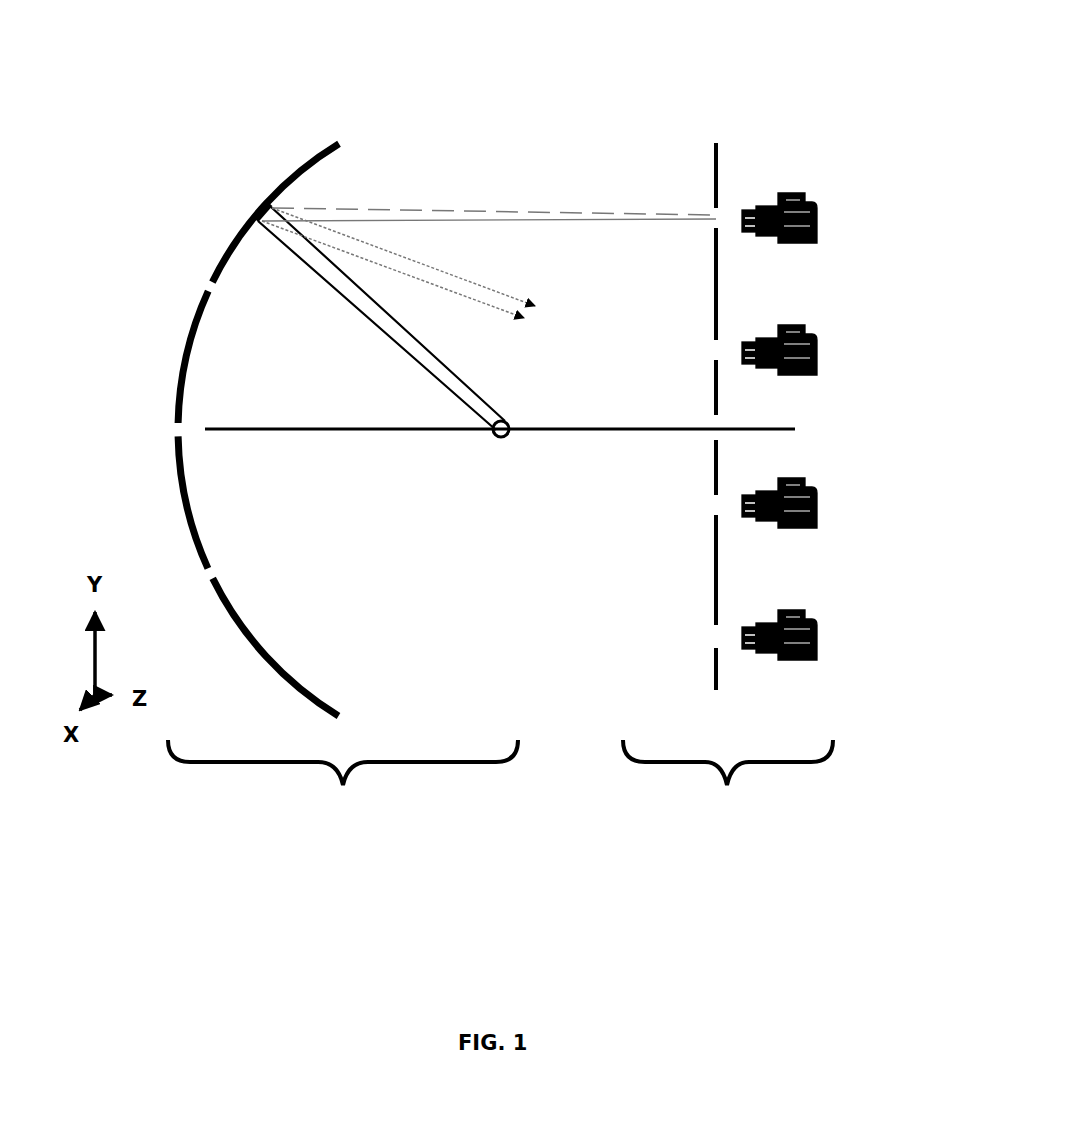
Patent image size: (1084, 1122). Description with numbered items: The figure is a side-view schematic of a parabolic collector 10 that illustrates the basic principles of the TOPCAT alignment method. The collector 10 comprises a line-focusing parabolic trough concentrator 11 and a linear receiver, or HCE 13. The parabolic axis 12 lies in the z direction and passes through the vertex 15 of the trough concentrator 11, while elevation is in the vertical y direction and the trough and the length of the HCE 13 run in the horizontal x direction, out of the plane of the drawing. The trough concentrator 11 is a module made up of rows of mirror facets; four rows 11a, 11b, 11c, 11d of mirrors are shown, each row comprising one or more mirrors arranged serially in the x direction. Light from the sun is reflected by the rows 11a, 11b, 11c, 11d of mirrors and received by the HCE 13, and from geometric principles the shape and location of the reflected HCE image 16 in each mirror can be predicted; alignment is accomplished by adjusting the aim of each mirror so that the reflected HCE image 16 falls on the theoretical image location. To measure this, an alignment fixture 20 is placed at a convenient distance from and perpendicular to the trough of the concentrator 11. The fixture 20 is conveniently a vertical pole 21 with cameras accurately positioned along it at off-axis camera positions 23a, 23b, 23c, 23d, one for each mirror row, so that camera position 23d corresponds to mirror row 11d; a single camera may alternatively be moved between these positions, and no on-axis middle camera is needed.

The parabolic collector 10 is at (343, 785).
The parabolic trough concentrator 11 is at (260, 388).
The mirror row 11a is at (283, 670).
The mirror row 11b is at (188, 513).
The mirror row 11c is at (190, 333).
The mirror row 11d is at (287, 186).
The parabolic axis 12 is at (332, 431).
The HCE 13 is at (505, 438).
The vertex 15 is at (160, 426).
The reflected HCE image 16 is at (262, 234).
The alignment fixture 20 is at (728, 785).
The vertical pole 21 is at (716, 127).
The camera position 23a is at (818, 637).
The camera position 23b is at (818, 505).
The camera position 23c is at (818, 352).
The camera position 23d is at (818, 220).